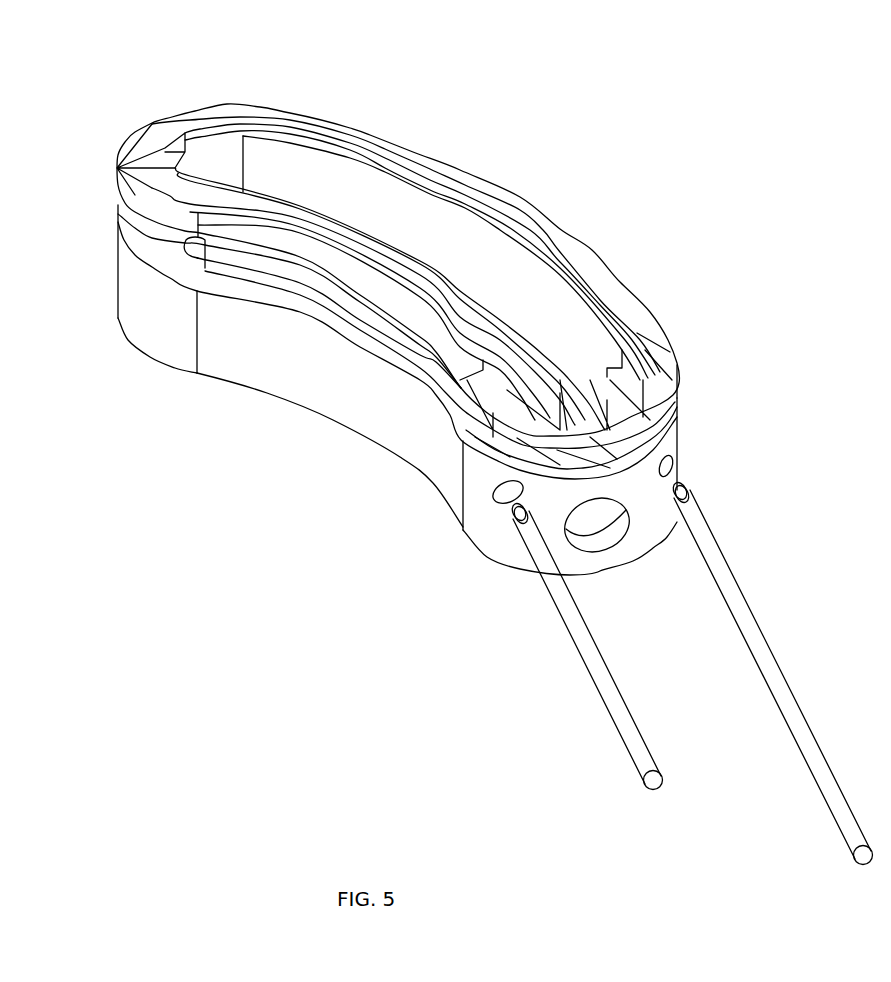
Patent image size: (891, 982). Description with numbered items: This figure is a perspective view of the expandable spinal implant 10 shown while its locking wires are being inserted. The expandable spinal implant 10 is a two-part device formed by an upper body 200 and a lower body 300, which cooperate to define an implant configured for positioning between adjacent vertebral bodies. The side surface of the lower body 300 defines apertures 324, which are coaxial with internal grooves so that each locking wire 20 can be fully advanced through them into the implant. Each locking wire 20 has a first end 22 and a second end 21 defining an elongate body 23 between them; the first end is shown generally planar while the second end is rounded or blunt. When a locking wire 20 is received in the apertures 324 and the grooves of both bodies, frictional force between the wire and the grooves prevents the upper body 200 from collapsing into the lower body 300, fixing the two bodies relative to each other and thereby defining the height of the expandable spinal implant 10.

The expandable spinal implant 10 is at (567, 142).
The upper body 200 is at (200, 90).
The lower body 300 is at (233, 420).
The apertures 324 is at (505, 502).
The locking wire 20 is at (795, 755).
The second end 21 is at (687, 490).
The first end 22 is at (857, 857).
The elongate body 23 is at (770, 672).